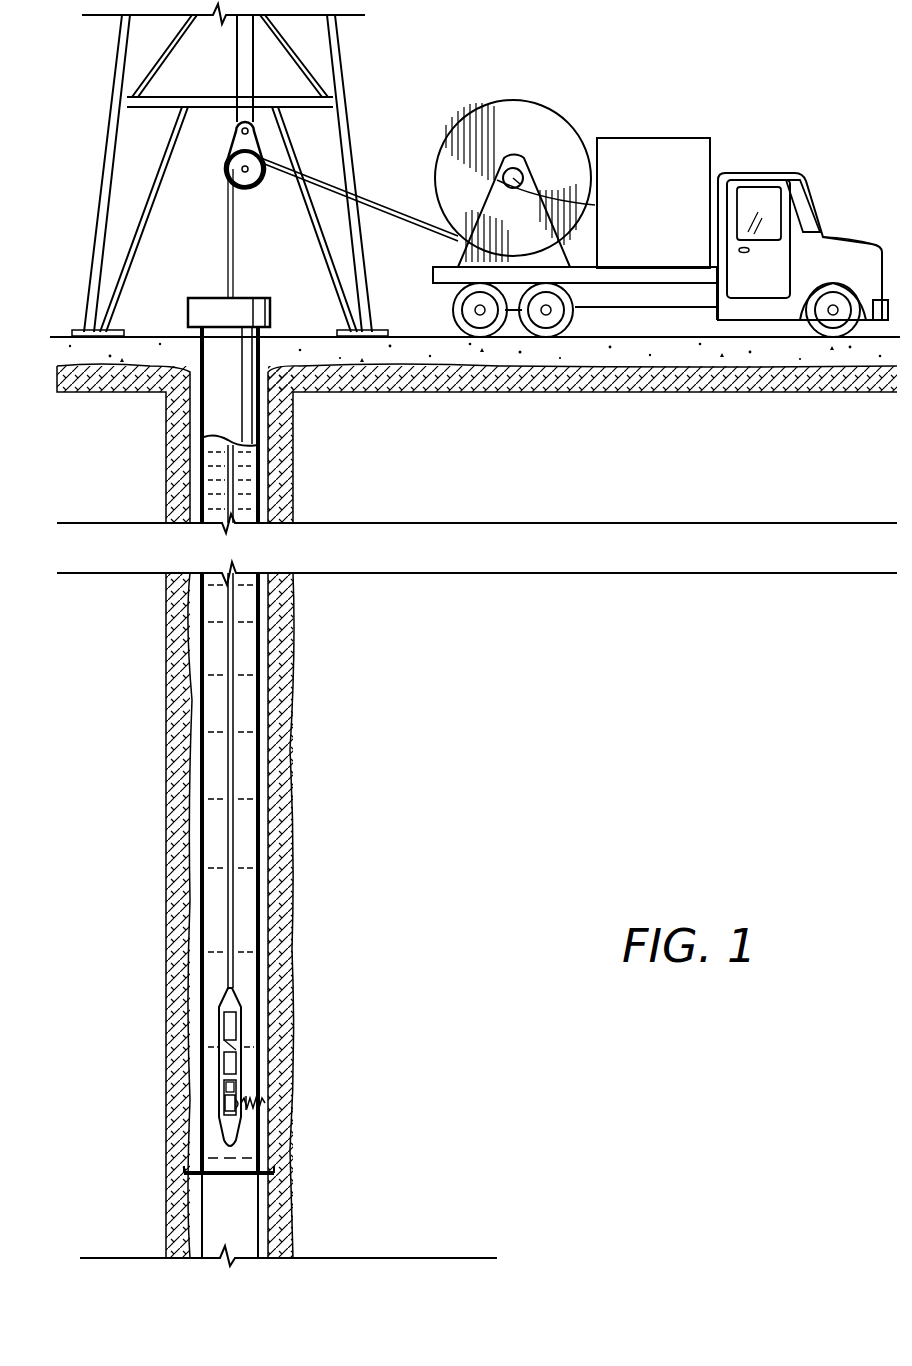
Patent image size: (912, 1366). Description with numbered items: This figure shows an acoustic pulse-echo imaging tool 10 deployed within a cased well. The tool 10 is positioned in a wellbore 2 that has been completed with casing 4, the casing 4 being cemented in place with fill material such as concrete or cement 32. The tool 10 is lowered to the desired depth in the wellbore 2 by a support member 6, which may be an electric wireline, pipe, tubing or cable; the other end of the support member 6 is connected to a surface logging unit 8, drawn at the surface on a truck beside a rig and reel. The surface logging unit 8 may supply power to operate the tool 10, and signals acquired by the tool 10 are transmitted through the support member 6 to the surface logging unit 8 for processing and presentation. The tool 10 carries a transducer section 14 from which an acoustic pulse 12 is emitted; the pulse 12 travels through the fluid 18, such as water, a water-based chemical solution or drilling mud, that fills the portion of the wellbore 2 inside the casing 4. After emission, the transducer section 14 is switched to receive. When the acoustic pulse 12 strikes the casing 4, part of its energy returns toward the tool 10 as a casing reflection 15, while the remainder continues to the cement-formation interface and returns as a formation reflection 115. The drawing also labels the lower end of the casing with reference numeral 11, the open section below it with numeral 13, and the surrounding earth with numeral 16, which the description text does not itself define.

The wellbore 2 is at (197, 485).
The casing 4 is at (202, 740).
The support member 6 is at (228, 658).
The surface logging unit 8 is at (652, 138).
The acoustic pulse-echo imaging tool 10 is at (222, 1012).
The casing shoe 11 is at (190, 1172).
The acoustic pulse 12 is at (255, 1093).
The open hole section 13 is at (228, 1212).
The transducer section 14 is at (222, 1092).
The casing reflection 15 is at (254, 1115).
The earth formation 16 is at (372, 864).
The fluid 18 is at (218, 887).
The cement 32 is at (190, 940).
The formation reflection 115 is at (266, 1104).